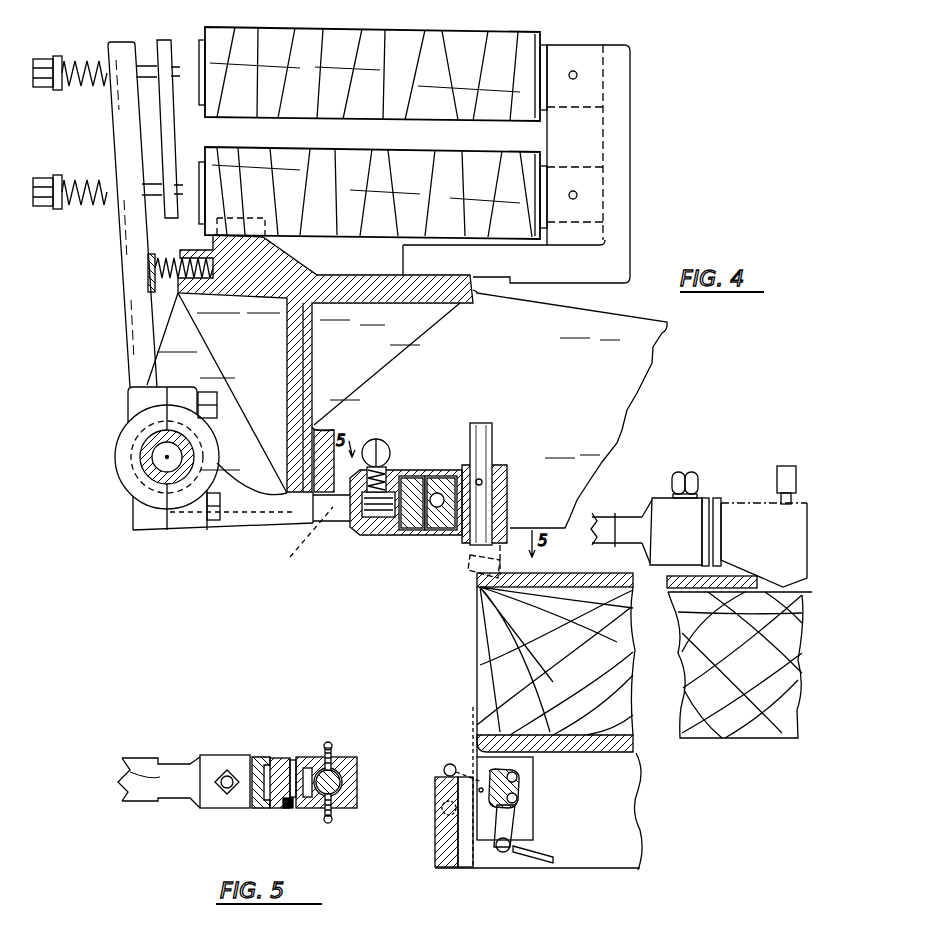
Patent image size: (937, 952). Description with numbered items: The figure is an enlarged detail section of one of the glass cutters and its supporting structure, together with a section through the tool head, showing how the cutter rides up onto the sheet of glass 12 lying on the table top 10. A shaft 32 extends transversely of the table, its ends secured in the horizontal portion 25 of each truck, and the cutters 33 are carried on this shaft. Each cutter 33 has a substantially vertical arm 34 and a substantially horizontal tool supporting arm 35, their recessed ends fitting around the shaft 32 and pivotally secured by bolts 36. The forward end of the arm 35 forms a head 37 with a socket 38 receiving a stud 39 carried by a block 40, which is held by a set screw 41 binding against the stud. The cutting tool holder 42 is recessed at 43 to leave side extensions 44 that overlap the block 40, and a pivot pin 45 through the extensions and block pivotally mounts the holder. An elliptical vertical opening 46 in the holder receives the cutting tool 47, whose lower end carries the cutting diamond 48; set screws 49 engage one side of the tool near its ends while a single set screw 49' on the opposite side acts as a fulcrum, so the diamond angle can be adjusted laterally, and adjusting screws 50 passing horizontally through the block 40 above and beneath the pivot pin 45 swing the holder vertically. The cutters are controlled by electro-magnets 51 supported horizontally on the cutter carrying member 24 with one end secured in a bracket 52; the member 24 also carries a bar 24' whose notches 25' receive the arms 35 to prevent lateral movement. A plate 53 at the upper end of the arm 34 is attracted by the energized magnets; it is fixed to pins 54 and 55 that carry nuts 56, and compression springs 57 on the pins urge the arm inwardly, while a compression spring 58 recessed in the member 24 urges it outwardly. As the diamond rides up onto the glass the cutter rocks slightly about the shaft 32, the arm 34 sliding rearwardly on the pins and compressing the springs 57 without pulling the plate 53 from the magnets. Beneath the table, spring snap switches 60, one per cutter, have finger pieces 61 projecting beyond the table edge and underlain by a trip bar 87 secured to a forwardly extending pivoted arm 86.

In FIG. 4, the table top 10 is at (497, 640).
In FIG. 4, the sheet of glass 12 is at (627, 572).
In FIG. 4, the cutter carrying member 24 is at (325, 355).
In FIG. 4, the bar 24' is at (351, 411).
In FIG. 4, the horizontal portion 25 is at (407, 408).
In FIG. 4, the notches 25' is at (251, 538).
In FIG. 4, the shaft 32 is at (160, 458).
In FIG. 4, the cutter 33 is at (134, 532).
In FIG. 4, the vertical arm 34 is at (125, 233).
In FIG. 4, the tool supporting arm 35 is at (297, 515).
In FIG. 5, the tool supporting arm 35 is at (138, 768).
In FIG. 4, the bolts 36 is at (128, 398).
In FIG. 5, the head 37 is at (214, 766).
In FIG. 4, the socket 38 is at (388, 520).
In FIG. 4, the stud 39 is at (407, 474).
In FIG. 4, the block 40 is at (432, 474).
In FIG. 5, the block 40 is at (258, 770).
In FIG. 4, the set screw 41 is at (385, 440).
In FIG. 4, the cutting tool holder 42 is at (743, 520).
In FIG. 5, the cutting tool holder 42 is at (352, 780).
In FIG. 5, the recess 43 is at (289, 808).
In FIG. 5, the side extensions 44 is at (281, 768).
In FIG. 5, the pivot pin 45 is at (294, 770).
In FIG. 5, the vertical opening 46 is at (352, 800).
In FIG. 5, the cutting tool 47 is at (340, 770).
In FIG. 4, the cutting diamond 48 is at (478, 582).
In FIG. 5, the set screws 49 is at (338, 746).
In FIG. 5, the set screw 49' is at (332, 823).
In FIG. 4, the adjusting screws 50 is at (497, 490).
In FIG. 4, the electro-magnets 51 is at (492, 117).
In FIG. 4, the bracket 52 is at (618, 153).
In FIG. 4, the plate 53 is at (172, 143).
In FIG. 4, the pin 54 is at (146, 80).
In FIG. 4, the pin 55 is at (152, 182).
In FIG. 4, the nuts 56 is at (45, 176).
In FIG. 4, the compression springs 57 is at (87, 176).
In FIG. 4, the compression spring 58 is at (172, 262).
In FIG. 4, the spring snap switches 60 is at (518, 798).
In FIG. 4, the finger pieces 61 is at (455, 760).
In FIG. 4, the forwardly extending arm 86 is at (633, 776).
In FIG. 4, the trip bar 87 is at (440, 833).